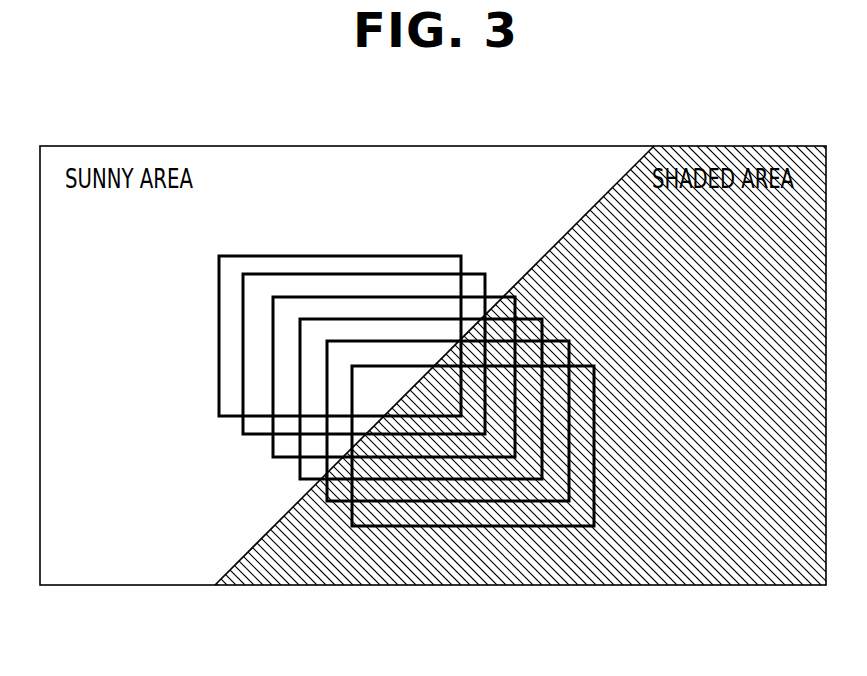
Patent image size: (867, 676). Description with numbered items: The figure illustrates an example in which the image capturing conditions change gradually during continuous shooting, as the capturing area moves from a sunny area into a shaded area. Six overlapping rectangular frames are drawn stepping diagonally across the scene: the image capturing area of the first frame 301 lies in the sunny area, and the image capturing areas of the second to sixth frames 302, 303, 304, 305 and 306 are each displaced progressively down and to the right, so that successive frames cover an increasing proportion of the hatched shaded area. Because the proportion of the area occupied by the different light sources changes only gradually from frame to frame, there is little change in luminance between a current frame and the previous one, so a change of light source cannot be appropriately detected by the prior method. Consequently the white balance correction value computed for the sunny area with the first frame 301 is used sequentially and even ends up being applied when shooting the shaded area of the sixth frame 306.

The image capturing area of the first frame 301 is at (219, 262).
The image capturing area of the second frame 302 is at (243, 303).
The image capturing area of the third frame 303 is at (273, 349).
The image capturing area of the fourth frame 304 is at (300, 388).
The image capturing area of the fifth frame 305 is at (327, 490).
The image capturing area of the sixth frame 306 is at (413, 527).